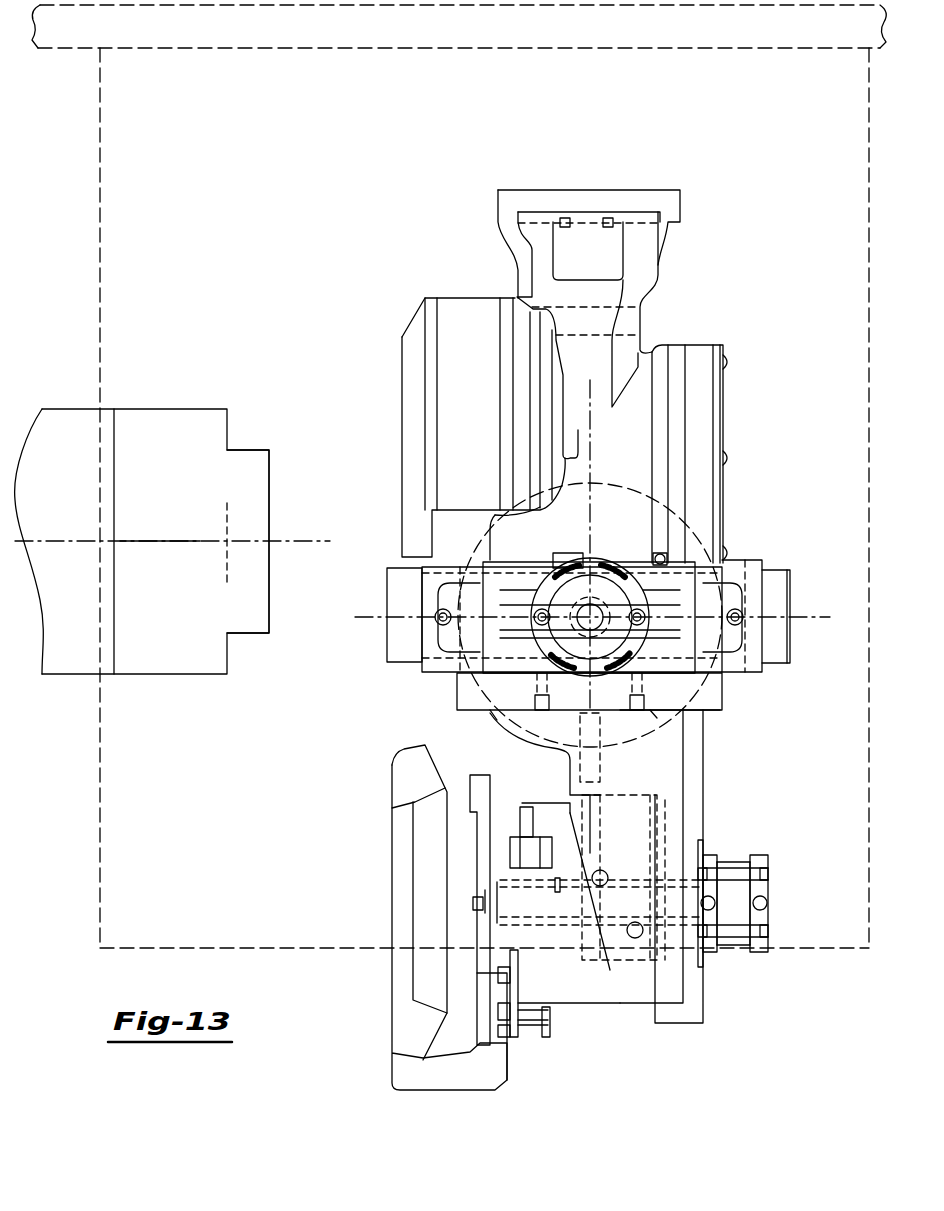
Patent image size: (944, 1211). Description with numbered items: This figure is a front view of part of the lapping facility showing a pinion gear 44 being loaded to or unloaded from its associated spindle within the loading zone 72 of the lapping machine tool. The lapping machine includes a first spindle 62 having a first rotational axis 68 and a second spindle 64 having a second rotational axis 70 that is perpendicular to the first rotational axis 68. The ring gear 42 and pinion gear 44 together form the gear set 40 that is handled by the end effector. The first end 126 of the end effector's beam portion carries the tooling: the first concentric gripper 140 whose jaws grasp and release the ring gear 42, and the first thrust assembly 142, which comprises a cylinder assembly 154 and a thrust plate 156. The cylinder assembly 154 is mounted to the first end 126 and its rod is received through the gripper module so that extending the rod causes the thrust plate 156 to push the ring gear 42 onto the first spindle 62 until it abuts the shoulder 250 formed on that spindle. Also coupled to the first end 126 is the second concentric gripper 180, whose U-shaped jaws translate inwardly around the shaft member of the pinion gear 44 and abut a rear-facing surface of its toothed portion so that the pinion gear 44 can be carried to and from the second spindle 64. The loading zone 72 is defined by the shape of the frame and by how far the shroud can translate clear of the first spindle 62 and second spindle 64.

The gear set 40 is at (363, 737).
The ring gear 42 is at (398, 1025).
The pinion gear 44 is at (648, 590).
The first spindle 62 is at (60, 418).
The second spindle 64 is at (717, 713).
The first rotational axis 68 is at (165, 541).
The second rotational axis 70 is at (590, 617).
The loading zone 72 is at (138, 143).
The first end 126 is at (640, 778).
The first concentric gripper 140 is at (567, 998).
The first thrust assembly 142 is at (770, 894).
The cylinder assembly 154 is at (765, 913).
The thrust plate 156 is at (480, 785).
The second concentric gripper 180 is at (663, 596).
The shoulder 250 is at (228, 662).